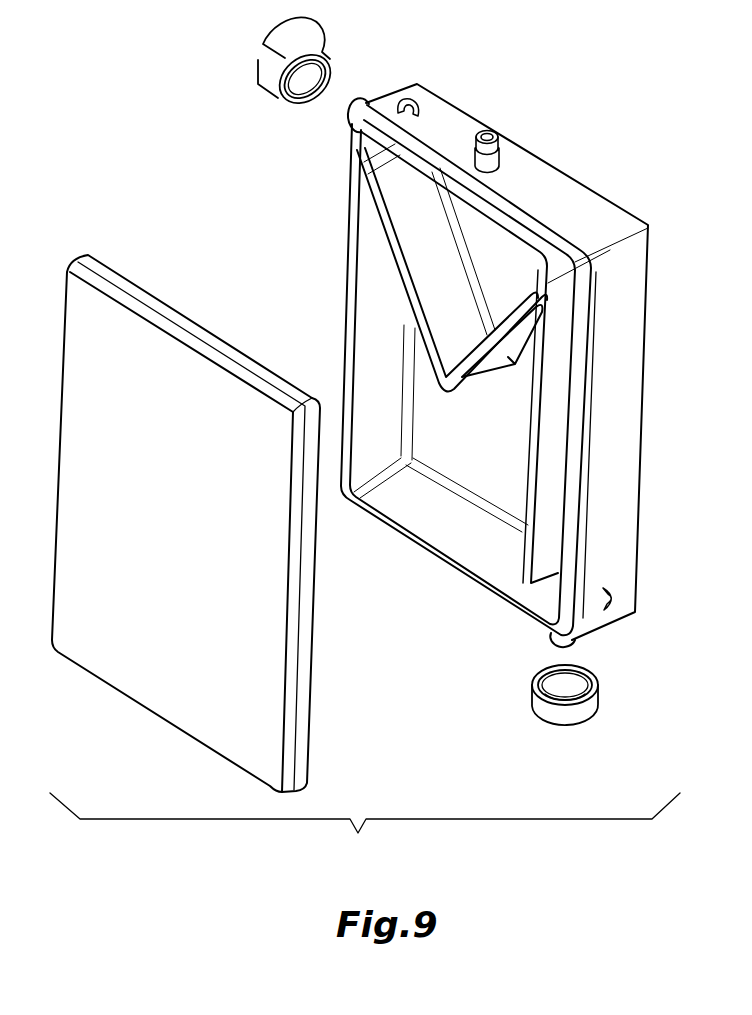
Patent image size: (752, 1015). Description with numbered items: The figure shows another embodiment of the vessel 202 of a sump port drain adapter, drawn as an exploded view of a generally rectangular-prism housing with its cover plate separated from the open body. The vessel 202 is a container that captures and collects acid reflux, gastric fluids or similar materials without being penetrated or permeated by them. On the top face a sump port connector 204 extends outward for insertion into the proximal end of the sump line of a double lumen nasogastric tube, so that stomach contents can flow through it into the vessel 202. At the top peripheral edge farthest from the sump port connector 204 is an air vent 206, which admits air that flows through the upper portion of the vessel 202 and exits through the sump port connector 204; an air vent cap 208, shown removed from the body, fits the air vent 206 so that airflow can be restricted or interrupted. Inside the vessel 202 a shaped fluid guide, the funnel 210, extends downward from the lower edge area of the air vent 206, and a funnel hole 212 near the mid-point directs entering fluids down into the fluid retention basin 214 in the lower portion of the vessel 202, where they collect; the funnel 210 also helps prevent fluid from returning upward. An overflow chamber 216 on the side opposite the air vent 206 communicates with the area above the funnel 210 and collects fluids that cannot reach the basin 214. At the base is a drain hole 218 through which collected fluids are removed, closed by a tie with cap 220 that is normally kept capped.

The vessel 202 is at (365, 834).
The sump port connector 204 is at (487, 160).
The air vent 206 is at (360, 100).
The air vent cap 208 is at (282, 56).
The funnel 210 is at (446, 254).
The funnel hole 212 is at (466, 356).
The fluid retention basin 214 is at (423, 493).
The overflow chamber 216 is at (562, 453).
The drain hole 218 is at (562, 638).
The tie with cap 220 is at (590, 716).